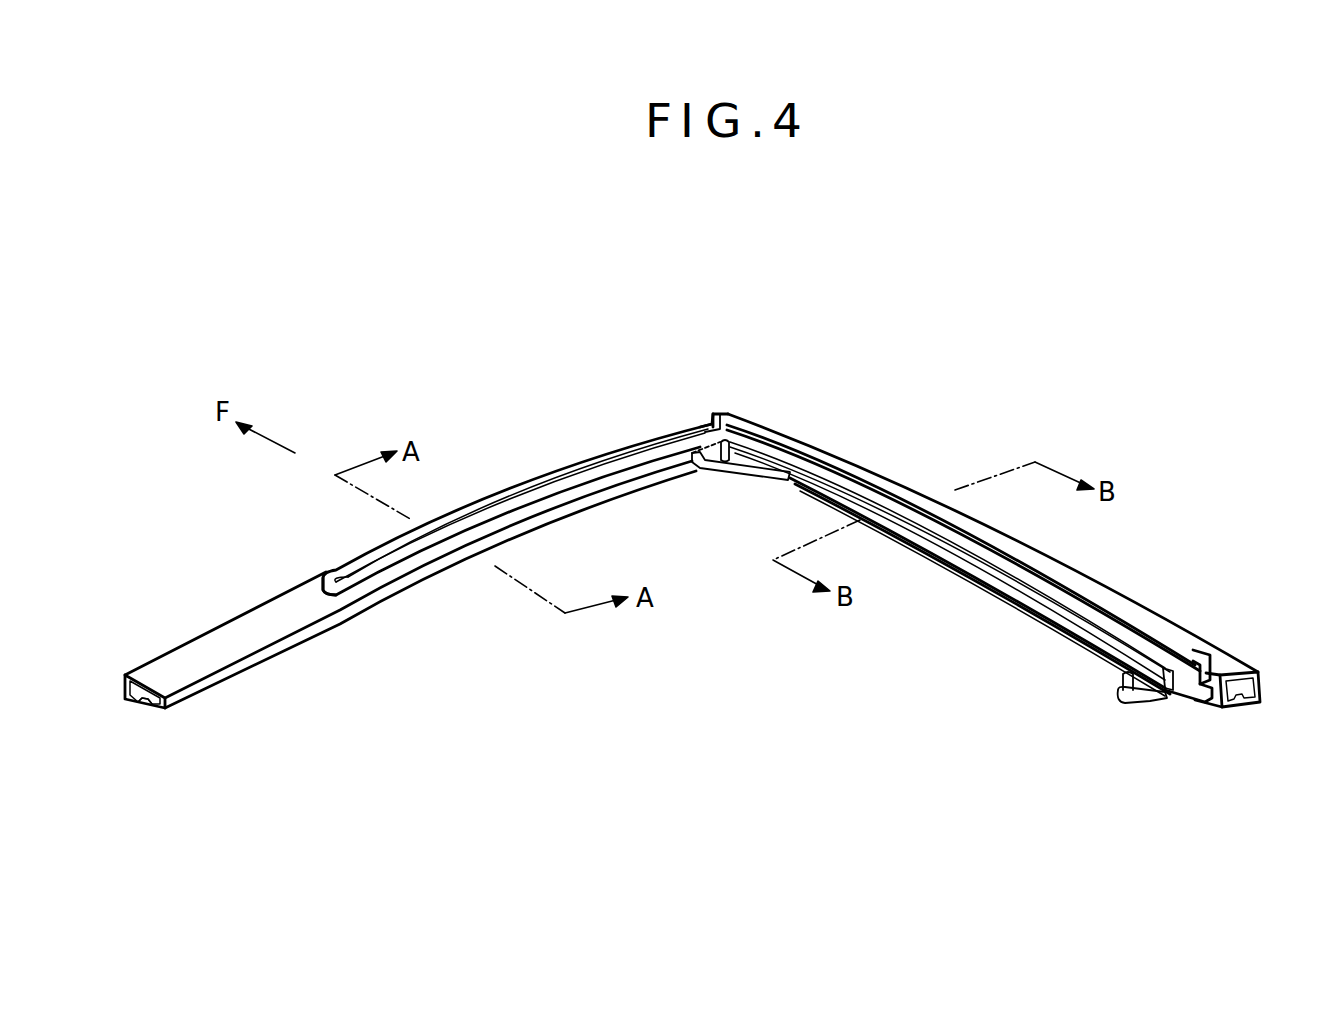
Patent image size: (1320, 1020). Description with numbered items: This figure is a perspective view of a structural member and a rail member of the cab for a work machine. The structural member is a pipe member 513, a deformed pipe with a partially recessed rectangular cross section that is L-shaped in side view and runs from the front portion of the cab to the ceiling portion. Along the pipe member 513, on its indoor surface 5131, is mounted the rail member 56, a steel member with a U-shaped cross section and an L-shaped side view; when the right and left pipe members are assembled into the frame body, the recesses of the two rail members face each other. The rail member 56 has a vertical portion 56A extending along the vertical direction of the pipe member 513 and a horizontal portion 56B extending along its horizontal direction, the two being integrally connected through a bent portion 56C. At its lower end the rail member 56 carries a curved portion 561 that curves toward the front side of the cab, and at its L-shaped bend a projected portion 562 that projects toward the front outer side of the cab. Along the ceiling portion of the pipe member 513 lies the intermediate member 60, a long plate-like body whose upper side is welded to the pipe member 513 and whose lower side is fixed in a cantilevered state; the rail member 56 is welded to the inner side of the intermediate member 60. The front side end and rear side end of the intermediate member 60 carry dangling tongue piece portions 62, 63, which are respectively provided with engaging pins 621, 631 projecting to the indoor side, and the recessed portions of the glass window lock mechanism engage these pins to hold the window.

The pipe member 513 is at (860, 462).
The indoor surface 5131 is at (240, 637).
The rail member 56 is at (767, 515).
The vertical portion 56A is at (640, 462).
The horizontal portion 56B is at (752, 434).
The bent portion 56C is at (1082, 606).
The curved portion 561 is at (338, 594).
The projected portion 562 is at (720, 410).
The intermediate member 60 is at (980, 592).
The tongue piece portion 62 is at (1140, 702).
The engaging pin 621 is at (1118, 682).
The tongue piece portion 63 is at (748, 470).
The engaging pin 631 is at (722, 460).